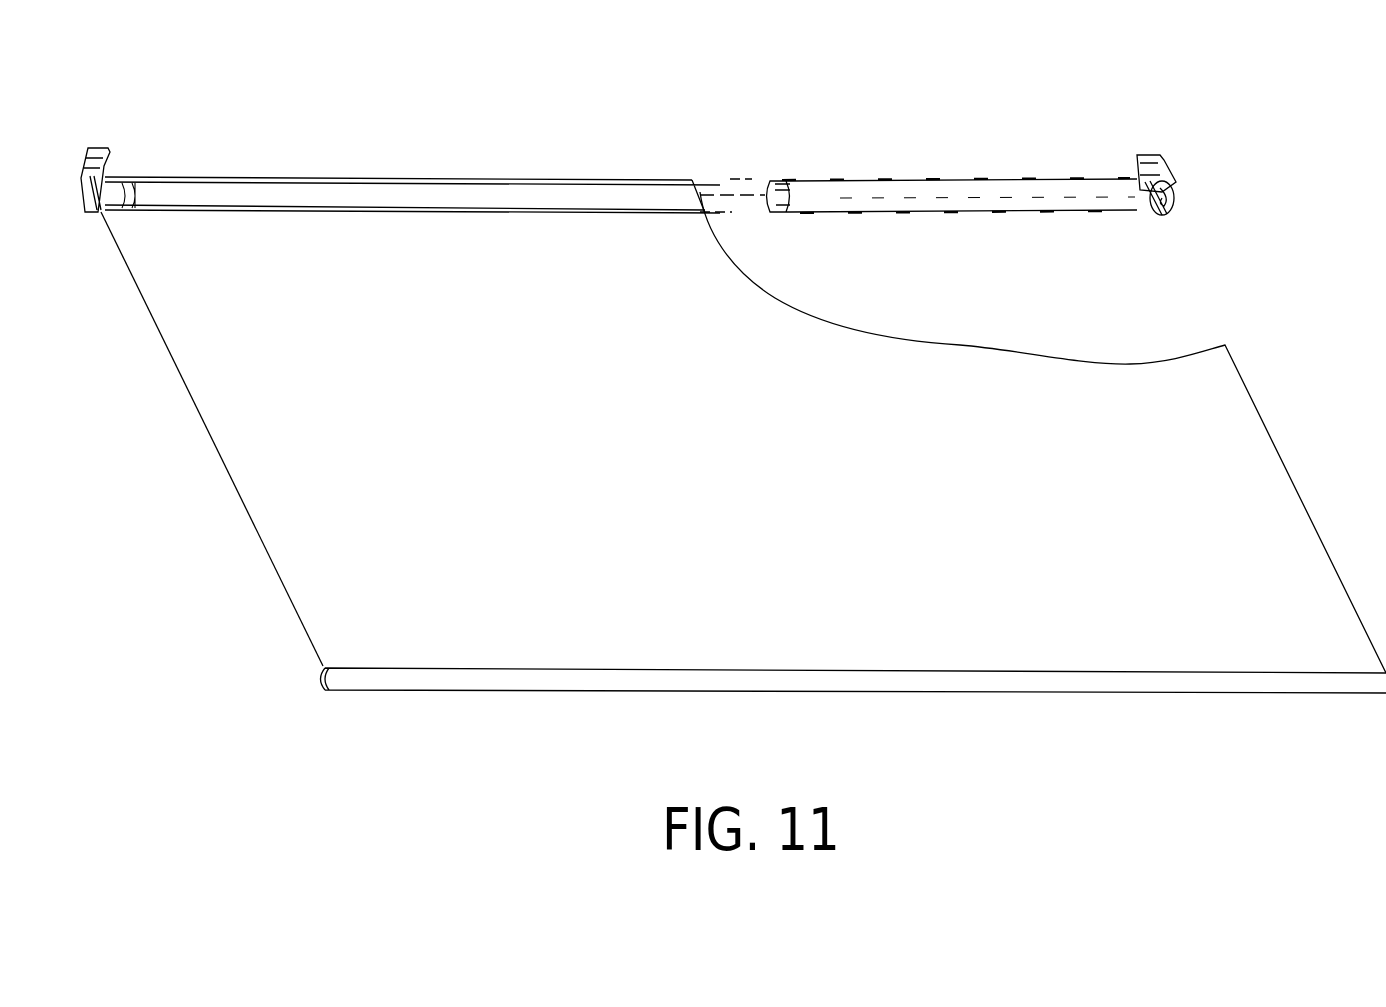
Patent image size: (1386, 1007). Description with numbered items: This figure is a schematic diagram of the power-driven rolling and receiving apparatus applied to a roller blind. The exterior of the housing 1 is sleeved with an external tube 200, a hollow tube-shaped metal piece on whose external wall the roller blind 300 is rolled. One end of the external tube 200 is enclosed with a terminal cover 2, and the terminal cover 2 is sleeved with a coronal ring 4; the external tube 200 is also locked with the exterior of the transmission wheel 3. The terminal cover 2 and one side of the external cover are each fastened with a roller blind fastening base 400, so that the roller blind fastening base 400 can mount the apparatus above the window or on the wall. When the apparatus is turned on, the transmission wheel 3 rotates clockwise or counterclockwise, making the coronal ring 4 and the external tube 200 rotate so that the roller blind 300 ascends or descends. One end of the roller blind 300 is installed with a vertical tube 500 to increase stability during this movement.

The housing 1 is at (884, 185).
The terminal cover 2 is at (1183, 197).
The transmission wheel 3 is at (774, 182).
The coronal ring 4 is at (1145, 213).
The external tube 200 is at (277, 190).
The roller blind 300 is at (272, 450).
The roller blind fastening base 400 is at (95, 148).
The vertical tube 500 is at (372, 680).